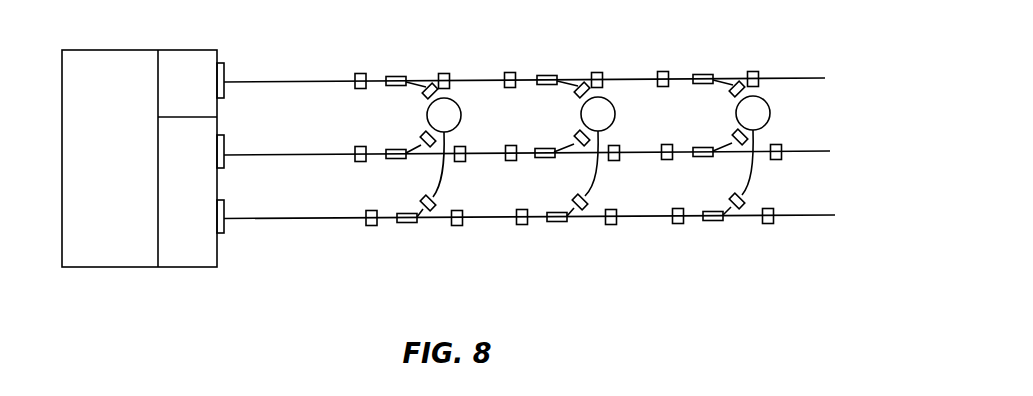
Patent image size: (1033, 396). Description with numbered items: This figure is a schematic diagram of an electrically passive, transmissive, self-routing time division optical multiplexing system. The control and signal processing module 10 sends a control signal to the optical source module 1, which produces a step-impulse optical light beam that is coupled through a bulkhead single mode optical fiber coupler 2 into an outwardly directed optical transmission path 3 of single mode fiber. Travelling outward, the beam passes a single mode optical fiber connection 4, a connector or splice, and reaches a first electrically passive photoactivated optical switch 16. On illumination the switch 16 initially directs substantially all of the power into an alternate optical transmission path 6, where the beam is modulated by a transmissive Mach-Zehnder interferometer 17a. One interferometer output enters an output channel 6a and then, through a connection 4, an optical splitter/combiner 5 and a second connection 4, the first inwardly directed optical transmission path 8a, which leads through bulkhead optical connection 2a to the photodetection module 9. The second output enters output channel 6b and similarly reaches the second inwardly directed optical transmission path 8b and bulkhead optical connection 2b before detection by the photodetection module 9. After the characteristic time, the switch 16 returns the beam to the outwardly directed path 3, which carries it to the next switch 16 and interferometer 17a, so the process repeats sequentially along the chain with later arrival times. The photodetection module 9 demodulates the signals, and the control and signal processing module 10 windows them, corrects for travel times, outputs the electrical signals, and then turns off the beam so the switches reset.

The optical source module 1 is at (190, 62).
The bulkhead single mode optical fiber coupler 2 is at (221, 65).
The bulkhead optical connection 2a is at (221, 163).
The bulkhead optical connection 2b is at (221, 236).
The outwardly directed optical transmission path 3 is at (277, 76).
The single mode optical fiber connection 4 is at (357, 73).
The optical splitter/combiner 5 is at (392, 158).
The alternate optical transmission path 6 is at (407, 92).
The output channel 6a is at (413, 147).
The output channel 6b is at (437, 177).
The first inwardly directed optical transmission path 8a is at (327, 157).
The second inwardly directed optical transmission path 8b is at (315, 226).
The photodetection module 9 is at (173, 255).
The control and signal processing module 10 is at (128, 245).
The photoactivated optical switch 16 is at (392, 75).
The Mach-Zehnder interferometer 17a is at (447, 108).